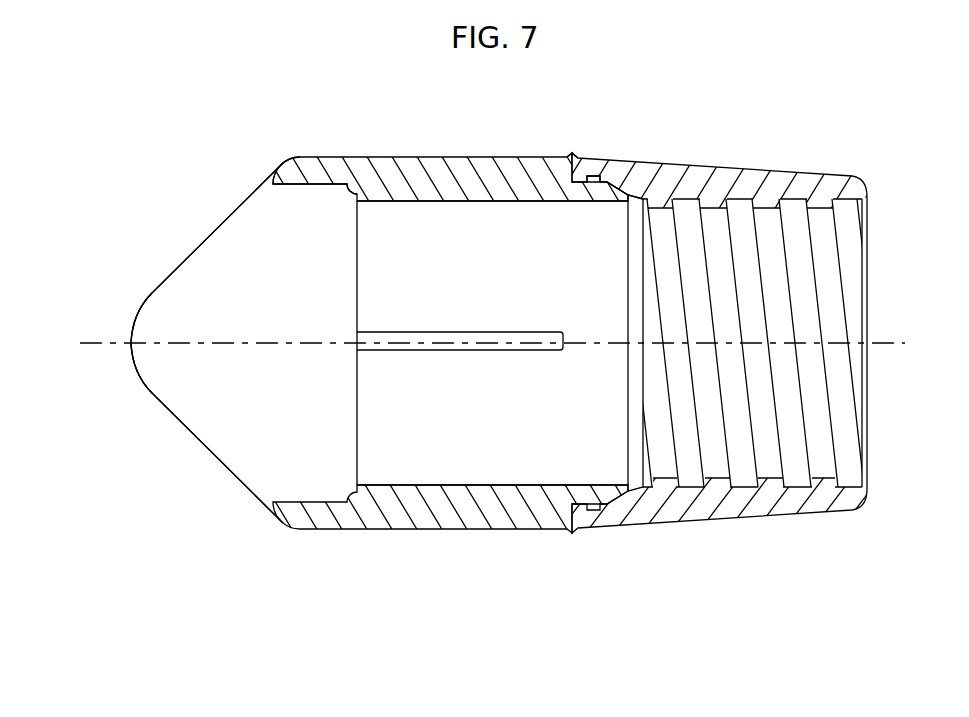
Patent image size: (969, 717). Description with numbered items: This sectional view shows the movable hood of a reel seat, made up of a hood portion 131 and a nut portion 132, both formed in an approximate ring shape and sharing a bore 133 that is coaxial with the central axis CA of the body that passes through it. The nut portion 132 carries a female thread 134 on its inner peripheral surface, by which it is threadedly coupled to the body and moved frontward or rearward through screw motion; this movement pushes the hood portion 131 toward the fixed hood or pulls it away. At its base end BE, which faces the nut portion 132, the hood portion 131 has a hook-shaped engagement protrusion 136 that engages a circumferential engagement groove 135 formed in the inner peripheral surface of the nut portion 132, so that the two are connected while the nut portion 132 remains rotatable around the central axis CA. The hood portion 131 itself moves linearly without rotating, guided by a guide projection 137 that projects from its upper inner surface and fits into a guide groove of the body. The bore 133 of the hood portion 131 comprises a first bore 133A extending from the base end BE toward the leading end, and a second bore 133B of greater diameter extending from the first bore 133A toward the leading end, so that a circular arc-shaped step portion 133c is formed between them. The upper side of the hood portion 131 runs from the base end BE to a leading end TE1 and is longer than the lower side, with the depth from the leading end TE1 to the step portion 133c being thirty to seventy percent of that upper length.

The hood portion 131 is at (468, 175).
The nut portion 132 is at (742, 170).
The bore 133 is at (420, 612).
The first bore 133A is at (430, 455).
The second bore 133B is at (306, 457).
The step portion 133c is at (356, 190).
The female thread 134 is at (798, 228).
The engagement groove 135 is at (596, 180).
The engagement protrusion 136 is at (626, 185).
The guide projection 137 is at (418, 336).
The base end BE is at (569, 156).
The central axis CA is at (476, 344).
The leading end of upper side TE1 is at (130, 347).